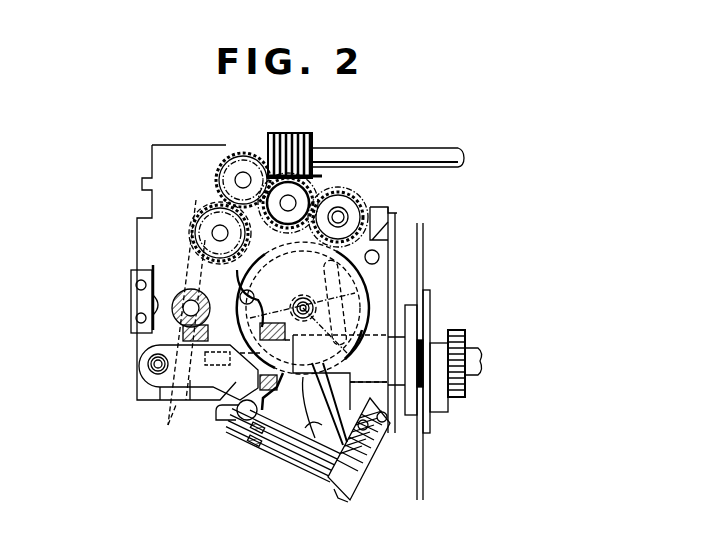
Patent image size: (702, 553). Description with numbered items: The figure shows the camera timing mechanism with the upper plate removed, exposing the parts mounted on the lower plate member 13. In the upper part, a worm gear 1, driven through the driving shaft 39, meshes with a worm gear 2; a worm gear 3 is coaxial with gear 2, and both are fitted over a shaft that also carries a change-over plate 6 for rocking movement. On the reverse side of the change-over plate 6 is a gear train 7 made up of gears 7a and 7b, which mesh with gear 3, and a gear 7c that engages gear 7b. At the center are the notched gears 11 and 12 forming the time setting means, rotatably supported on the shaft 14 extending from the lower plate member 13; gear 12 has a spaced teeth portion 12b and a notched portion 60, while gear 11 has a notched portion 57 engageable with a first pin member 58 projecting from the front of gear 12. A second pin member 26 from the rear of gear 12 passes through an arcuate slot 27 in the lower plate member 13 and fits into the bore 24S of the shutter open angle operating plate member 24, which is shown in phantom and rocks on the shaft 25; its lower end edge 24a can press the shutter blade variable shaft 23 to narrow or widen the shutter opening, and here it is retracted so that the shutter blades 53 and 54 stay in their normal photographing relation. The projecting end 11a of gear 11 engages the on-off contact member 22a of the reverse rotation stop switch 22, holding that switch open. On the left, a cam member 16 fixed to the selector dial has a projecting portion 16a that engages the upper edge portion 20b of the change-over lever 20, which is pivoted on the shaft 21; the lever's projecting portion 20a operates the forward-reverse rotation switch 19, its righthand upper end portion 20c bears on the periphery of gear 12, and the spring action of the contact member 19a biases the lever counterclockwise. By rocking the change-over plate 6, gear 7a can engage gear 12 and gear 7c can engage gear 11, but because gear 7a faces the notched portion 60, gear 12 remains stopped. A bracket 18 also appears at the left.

The worm gear 1 is at (291, 132).
The worm gear 2 is at (301, 196).
The worm gear 3 is at (330, 190).
The change-over plate 6 is at (322, 180).
The gear train 7 is at (221, 142).
The gear 7a is at (360, 205).
The gear 7b is at (243, 154).
The gear 7c is at (192, 224).
The notched gear 11 is at (323, 366).
The projecting end 11a is at (350, 368).
The notched gear 12 is at (315, 388).
The spaced teeth portion 12b is at (272, 402).
The lower plate member 13 is at (168, 152).
The shaft 14 is at (301, 298).
The cam member 16 is at (180, 302).
The projecting portion 16a is at (181, 337).
The bracket 18 is at (137, 305).
The forward-reverse rotation switch 19 is at (249, 450).
The contact member 19a is at (252, 434).
The change-over lever 20 is at (158, 386).
The projecting portion 20a is at (231, 416).
The upper edge portion 20b is at (204, 388).
The righthand upper end portion 20c is at (256, 447).
The shaft 21 is at (146, 367).
The reverse rotation stop switch 22 is at (326, 486).
The on-off contact member 22a is at (304, 464).
The shutter blade variable shaft 23 is at (227, 371).
The shutter open angle operating plate member 24 is at (188, 272).
The lower end edge 24a is at (174, 418).
The bore 24S is at (424, 292).
The shaft 25 is at (207, 215).
The second pin member 26 is at (358, 347).
The arcuate slot 27 is at (381, 280).
The driving shaft 39 is at (428, 148).
The shutter blade 53 is at (421, 226).
The shutter blade 54 is at (425, 251).
The notched portion 57 is at (298, 306).
The first pin member 58 is at (240, 298).
The notched portion 60 is at (391, 225).